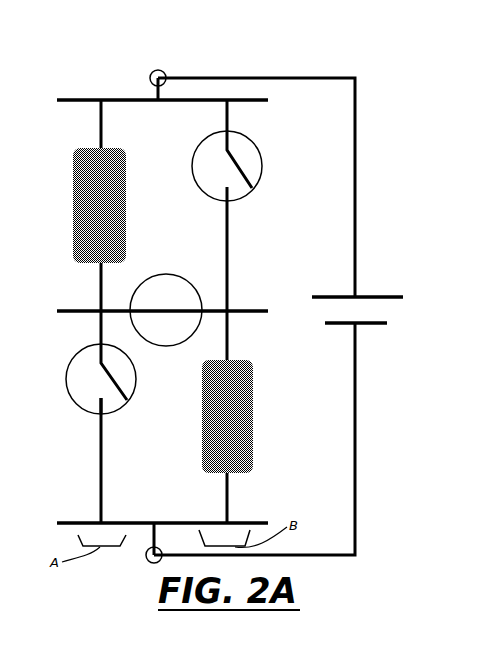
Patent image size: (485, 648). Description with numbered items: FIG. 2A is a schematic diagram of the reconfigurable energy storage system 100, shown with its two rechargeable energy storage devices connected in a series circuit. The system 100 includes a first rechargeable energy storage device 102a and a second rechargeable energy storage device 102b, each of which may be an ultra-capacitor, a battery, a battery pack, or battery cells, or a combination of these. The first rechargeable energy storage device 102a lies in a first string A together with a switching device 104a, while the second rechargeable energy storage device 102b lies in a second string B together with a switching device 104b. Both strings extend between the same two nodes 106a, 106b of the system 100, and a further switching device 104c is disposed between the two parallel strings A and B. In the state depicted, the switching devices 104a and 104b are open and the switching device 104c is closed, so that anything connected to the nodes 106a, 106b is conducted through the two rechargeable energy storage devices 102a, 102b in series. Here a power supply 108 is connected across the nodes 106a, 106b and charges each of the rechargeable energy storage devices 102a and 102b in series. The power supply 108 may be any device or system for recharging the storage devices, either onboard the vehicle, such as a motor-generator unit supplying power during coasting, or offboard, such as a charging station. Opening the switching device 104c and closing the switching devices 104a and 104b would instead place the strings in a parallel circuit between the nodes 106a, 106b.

The reconfigurable energy storage system 100 is at (269, 70).
The first rechargeable energy storage device 102a is at (122, 219).
The second rechargeable energy storage device 102b is at (250, 429).
The switching device 104a is at (109, 412).
The switching device 104b is at (250, 141).
The switching device 104c is at (172, 275).
The node 106a is at (161, 70).
The node 106b is at (150, 563).
The power supply 108 is at (340, 343).